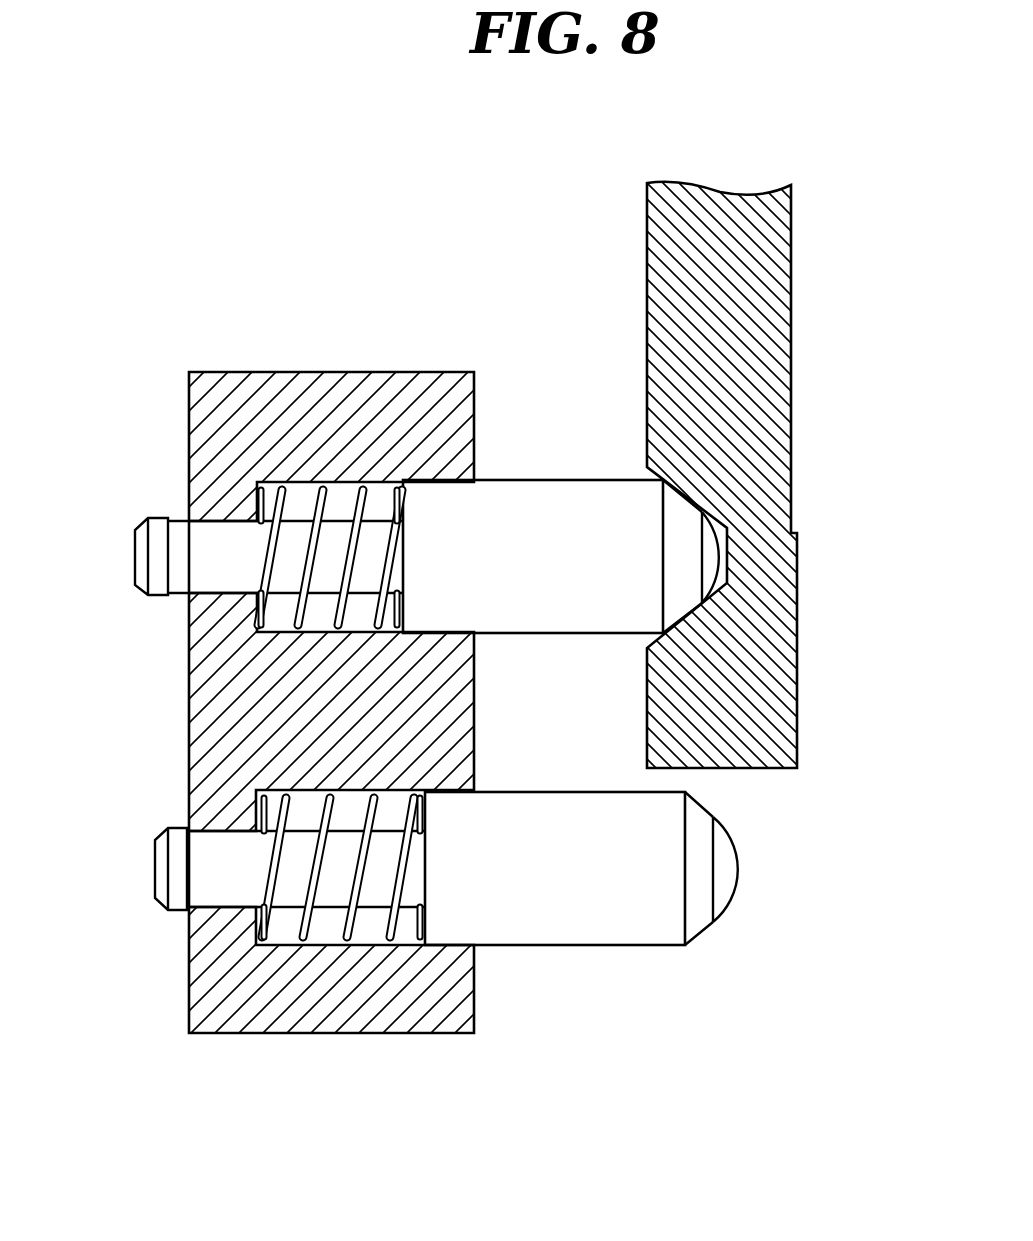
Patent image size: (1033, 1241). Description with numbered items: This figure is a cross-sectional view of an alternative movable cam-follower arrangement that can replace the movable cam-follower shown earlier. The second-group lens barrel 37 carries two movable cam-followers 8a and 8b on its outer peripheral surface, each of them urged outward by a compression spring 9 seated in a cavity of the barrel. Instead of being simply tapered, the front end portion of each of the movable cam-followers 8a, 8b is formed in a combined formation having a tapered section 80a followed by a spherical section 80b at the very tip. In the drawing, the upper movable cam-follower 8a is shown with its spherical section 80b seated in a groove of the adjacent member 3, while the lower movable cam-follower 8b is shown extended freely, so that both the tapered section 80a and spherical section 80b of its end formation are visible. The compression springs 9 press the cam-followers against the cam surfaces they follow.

The second-group lens barrel 37 is at (330, 372).
The member with V-shaped groove 3 is at (797, 632).
The movable cam-follower 8a is at (563, 488).
The movable cam-follower 8b is at (567, 938).
The tapered section 80a is at (680, 600).
The spherical section 80b is at (718, 557).
The compression spring 9 is at (267, 860).